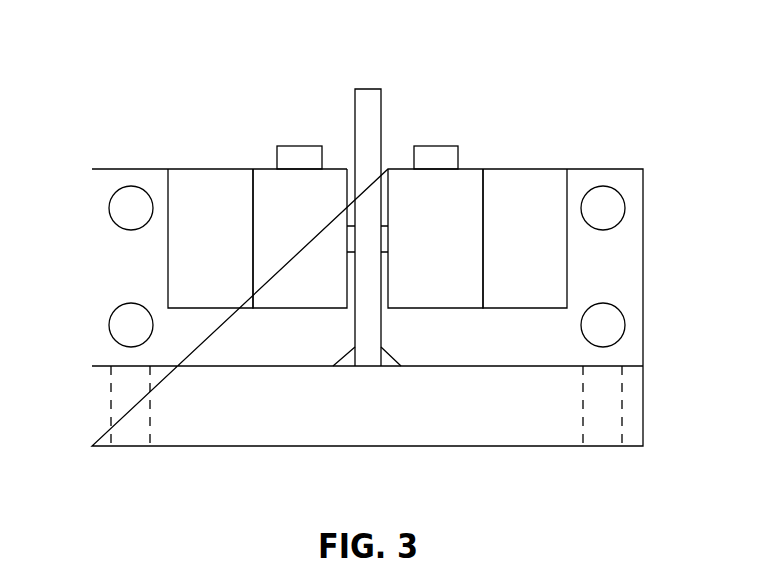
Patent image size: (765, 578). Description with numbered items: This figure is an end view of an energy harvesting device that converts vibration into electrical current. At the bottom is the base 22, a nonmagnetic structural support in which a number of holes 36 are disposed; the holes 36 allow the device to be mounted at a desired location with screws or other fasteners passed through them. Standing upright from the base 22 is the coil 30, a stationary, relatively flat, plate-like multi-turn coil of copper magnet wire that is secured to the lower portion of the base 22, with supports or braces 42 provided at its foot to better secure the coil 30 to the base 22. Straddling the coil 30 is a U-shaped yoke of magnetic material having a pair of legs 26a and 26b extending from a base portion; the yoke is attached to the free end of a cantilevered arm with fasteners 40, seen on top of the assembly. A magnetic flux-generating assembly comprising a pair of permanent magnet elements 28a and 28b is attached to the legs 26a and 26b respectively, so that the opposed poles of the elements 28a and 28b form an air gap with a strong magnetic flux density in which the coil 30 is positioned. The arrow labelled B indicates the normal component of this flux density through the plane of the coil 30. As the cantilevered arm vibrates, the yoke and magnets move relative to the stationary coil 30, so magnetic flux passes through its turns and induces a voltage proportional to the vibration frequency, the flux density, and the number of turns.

The base 22 is at (471, 448).
The leg of yoke 26a is at (201, 179).
The leg of yoke 26b is at (543, 179).
The permanent magnet 28a is at (267, 179).
The permanent magnet 28b is at (466, 179).
The coil 30 is at (370, 89).
The holes 36 is at (114, 194).
The fasteners 40 is at (303, 146).
The supports or braces 42 is at (345, 362).